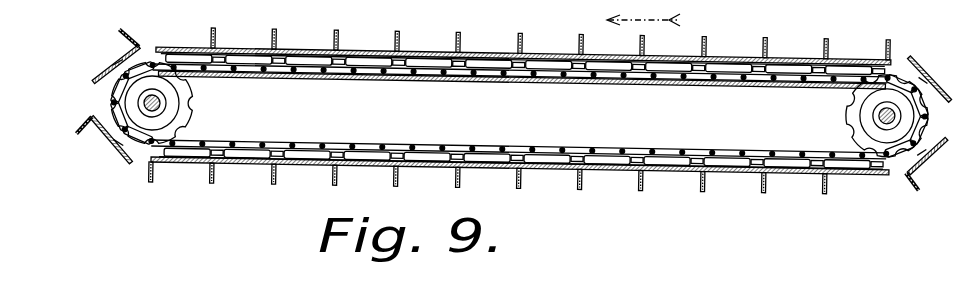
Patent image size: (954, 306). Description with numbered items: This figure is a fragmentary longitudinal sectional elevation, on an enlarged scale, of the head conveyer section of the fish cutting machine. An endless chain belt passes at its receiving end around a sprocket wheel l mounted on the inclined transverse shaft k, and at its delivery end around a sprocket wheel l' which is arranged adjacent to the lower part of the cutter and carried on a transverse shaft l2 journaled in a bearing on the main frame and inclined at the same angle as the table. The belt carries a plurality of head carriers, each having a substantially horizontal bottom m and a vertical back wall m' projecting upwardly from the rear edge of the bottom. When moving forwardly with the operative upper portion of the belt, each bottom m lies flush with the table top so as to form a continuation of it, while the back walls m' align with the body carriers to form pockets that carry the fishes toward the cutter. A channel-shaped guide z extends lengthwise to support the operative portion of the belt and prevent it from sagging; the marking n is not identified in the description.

The endless chain n is at (455, 101).
The channel-shaped guide z is at (618, 80).
The bottom m is at (520, 116).
The back wall m' is at (581, 114).
The sprocket wheel l' is at (169, 103).
The transverse shaft l2 is at (150, 103).
The sprocket wheel l is at (870, 115).
The transverse shaft k is at (875, 117).